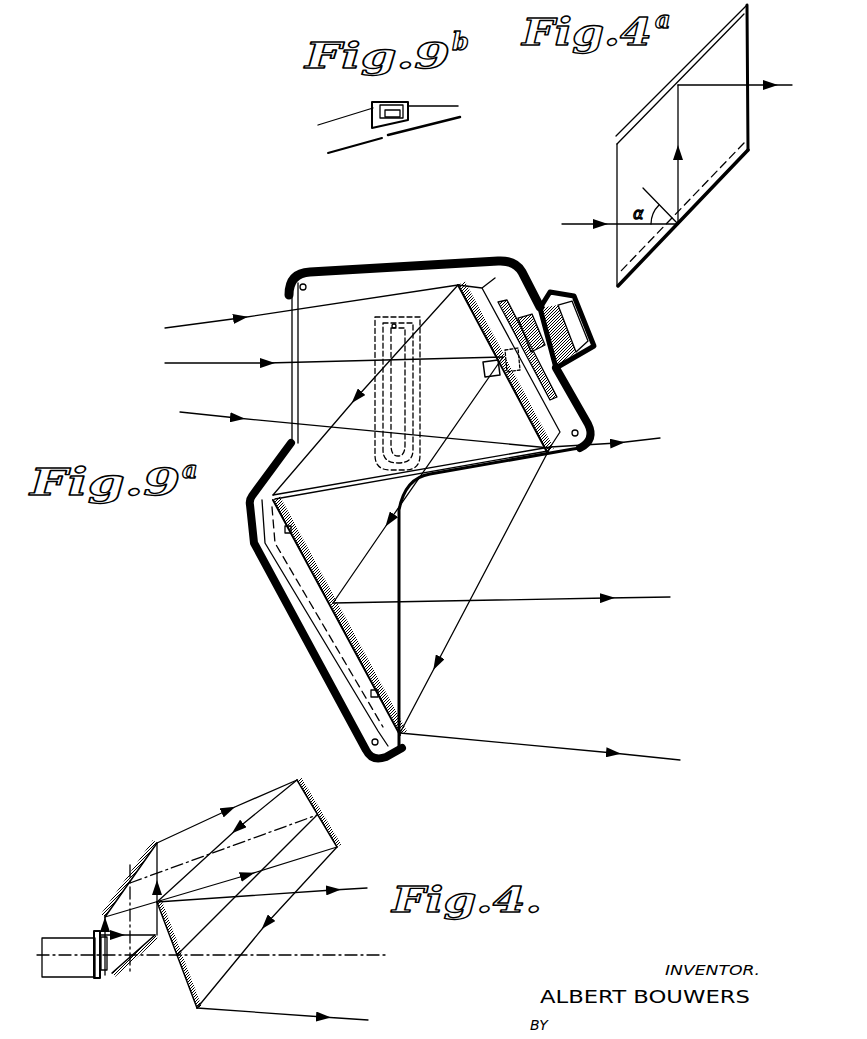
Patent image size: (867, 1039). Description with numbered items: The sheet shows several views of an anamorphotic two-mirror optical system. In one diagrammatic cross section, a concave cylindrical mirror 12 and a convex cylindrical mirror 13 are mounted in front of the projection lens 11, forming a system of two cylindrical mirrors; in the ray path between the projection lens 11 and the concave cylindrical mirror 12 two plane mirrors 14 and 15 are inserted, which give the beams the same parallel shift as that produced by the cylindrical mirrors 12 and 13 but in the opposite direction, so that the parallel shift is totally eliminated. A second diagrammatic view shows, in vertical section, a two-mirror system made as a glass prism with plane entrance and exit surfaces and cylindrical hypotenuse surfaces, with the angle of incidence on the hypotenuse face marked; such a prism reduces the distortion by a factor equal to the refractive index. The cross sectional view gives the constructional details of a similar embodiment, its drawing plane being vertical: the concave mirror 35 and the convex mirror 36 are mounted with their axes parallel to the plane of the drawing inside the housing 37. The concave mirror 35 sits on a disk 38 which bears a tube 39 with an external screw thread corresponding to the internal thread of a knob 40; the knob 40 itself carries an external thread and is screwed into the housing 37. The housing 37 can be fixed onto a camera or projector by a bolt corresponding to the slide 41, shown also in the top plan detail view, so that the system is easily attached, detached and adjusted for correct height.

In FIG. 4, the projection lens 11 is at (88, 941).
In FIG. 4, the concave cylindrical mirror 12 is at (320, 821).
In FIG. 4, the convex cylindrical mirror 13 is at (190, 994).
In FIG. 4, the plane mirror 14 is at (123, 955).
In FIG. 4, the plane mirror 15 is at (132, 878).
In FIG. 9A, the concave mirror 35 is at (558, 442).
In FIG. 9A, the convex mirror 36 is at (338, 648).
In FIG. 9A, the housing 37 is at (405, 266).
In FIG. 9A, the disk 38 is at (557, 392).
In FIG. 9A, the tube 39 is at (548, 311).
In FIG. 9A, the knob 40 is at (517, 362).
In FIG. 9A, the slide 41 is at (397, 415).